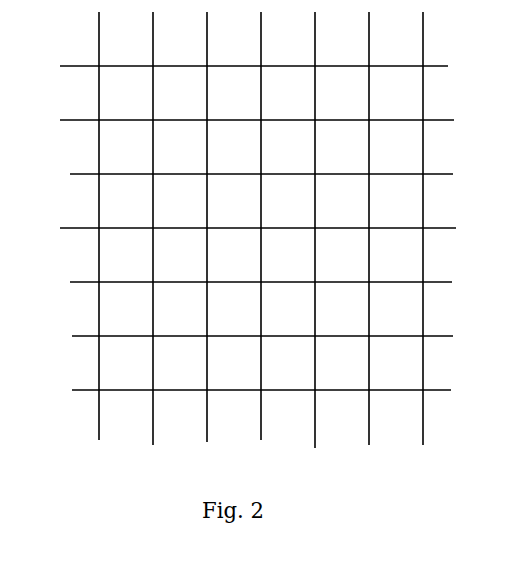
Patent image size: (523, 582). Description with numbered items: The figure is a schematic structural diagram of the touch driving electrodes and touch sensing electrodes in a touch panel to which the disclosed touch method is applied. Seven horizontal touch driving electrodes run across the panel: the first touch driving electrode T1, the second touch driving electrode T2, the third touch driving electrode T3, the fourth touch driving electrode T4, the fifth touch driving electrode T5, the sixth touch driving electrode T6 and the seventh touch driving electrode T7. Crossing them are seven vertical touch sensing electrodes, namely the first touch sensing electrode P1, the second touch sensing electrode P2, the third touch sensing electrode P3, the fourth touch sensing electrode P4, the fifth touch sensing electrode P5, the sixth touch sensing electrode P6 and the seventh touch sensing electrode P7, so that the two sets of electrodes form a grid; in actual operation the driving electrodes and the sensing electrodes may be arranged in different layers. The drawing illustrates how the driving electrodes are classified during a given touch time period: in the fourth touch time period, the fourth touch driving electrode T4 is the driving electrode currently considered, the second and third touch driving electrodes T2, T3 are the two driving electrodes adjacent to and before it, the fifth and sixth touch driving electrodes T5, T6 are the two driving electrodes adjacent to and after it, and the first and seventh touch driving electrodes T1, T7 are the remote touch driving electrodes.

The first touch driving electrode T1 is at (238, 74).
The second touch driving electrode T2 is at (243, 128).
The third touch driving electrode T3 is at (244, 182).
The fourth touch driving electrode T4 is at (244, 236).
The fifth touch driving electrode T5 is at (245, 290).
The sixth touch driving electrode T6 is at (248, 344).
The seventh touch driving electrode T7 is at (247, 398).
The first touch sensing electrode P1 is at (100, 243).
The second touch sensing electrode P2 is at (155, 243).
The third touch sensing electrode P3 is at (211, 243).
The fourth touch sensing electrode P4 is at (258, 243).
The fifth touch sensing electrode P5 is at (316, 243).
The sixth touch sensing electrode P6 is at (370, 243).
The seventh touch sensing electrode P7 is at (425, 243).